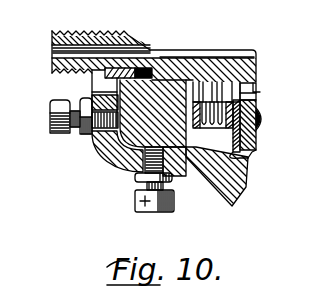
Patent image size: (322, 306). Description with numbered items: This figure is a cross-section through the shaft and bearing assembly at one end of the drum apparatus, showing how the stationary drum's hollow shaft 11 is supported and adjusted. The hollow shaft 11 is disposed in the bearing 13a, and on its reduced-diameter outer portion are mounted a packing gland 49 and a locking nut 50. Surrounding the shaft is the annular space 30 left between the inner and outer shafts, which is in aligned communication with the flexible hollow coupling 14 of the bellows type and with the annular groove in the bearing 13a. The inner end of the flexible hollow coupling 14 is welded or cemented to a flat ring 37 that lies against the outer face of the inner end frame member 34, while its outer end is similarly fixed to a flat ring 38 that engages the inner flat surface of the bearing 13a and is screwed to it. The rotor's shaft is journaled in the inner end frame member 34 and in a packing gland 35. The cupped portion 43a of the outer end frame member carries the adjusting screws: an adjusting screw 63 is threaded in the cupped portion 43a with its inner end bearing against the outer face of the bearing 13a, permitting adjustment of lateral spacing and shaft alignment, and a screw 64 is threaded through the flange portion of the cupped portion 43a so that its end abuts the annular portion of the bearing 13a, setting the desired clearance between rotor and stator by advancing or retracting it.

The hollow shaft 11 is at (107, 44).
The packing gland 49 is at (158, 57).
The locking nut 50 is at (138, 69).
The bearing 13a is at (117, 93).
The adjusting screw 63 is at (55, 130).
The cupped portion 43a is at (113, 162).
The flat ring 38 is at (186, 168).
The screw 64 is at (137, 200).
The annular space 30 is at (248, 89).
The flexible hollow coupling 14 is at (213, 126).
The inner end frame member 34 is at (250, 143).
The packing gland 35 is at (263, 121).
The flat ring 37 is at (248, 168).